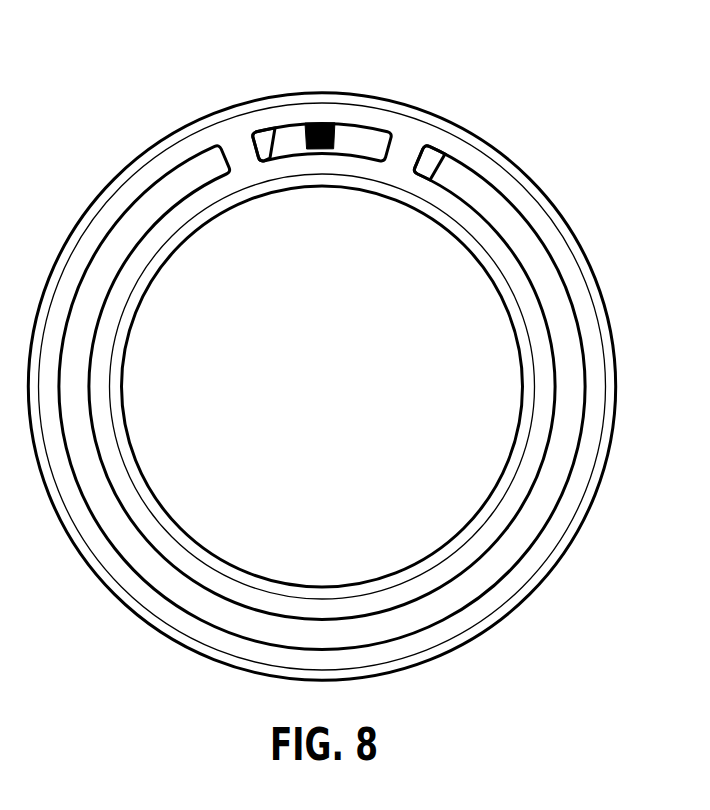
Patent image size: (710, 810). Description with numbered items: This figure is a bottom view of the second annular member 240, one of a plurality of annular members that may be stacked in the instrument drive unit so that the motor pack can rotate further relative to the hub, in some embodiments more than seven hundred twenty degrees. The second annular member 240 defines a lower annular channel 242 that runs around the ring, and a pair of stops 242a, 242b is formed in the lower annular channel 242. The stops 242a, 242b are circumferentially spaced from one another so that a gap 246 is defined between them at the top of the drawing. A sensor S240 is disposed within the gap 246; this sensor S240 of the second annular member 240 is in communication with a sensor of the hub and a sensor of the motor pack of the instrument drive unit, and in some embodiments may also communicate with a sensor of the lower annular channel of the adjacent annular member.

The second annular member 240 is at (617, 205).
The lower annular channel 242 is at (470, 186).
The stop 242a is at (263, 130).
The stop 242b is at (420, 158).
The gap 246 is at (360, 142).
The sensor S240 is at (318, 122).